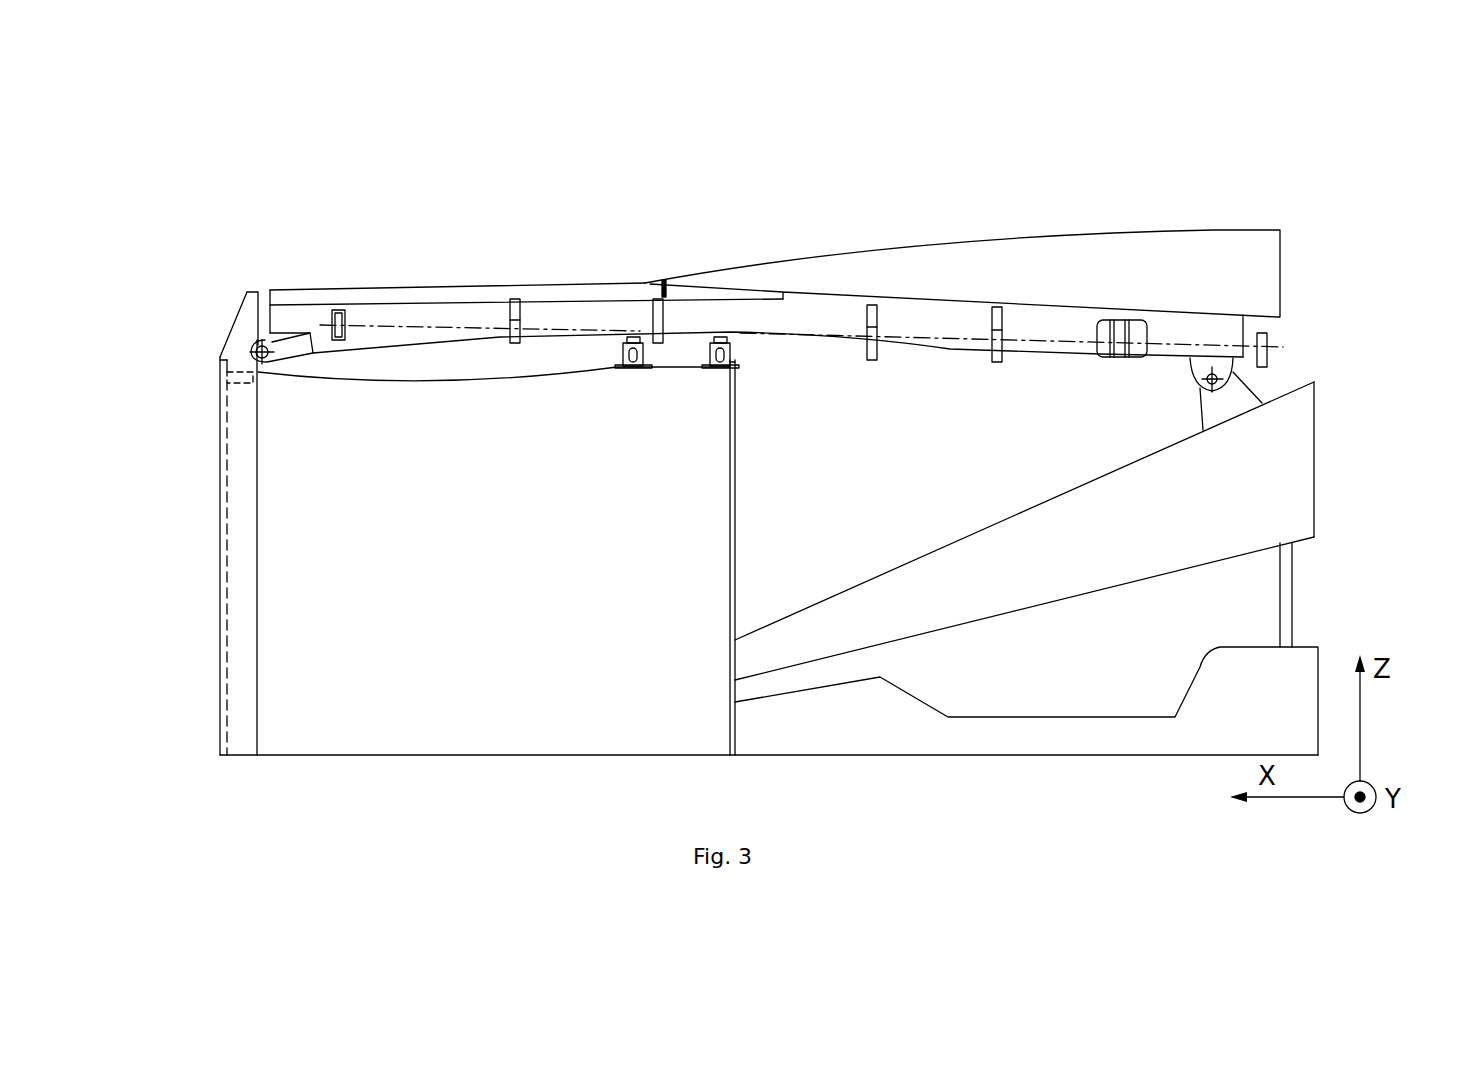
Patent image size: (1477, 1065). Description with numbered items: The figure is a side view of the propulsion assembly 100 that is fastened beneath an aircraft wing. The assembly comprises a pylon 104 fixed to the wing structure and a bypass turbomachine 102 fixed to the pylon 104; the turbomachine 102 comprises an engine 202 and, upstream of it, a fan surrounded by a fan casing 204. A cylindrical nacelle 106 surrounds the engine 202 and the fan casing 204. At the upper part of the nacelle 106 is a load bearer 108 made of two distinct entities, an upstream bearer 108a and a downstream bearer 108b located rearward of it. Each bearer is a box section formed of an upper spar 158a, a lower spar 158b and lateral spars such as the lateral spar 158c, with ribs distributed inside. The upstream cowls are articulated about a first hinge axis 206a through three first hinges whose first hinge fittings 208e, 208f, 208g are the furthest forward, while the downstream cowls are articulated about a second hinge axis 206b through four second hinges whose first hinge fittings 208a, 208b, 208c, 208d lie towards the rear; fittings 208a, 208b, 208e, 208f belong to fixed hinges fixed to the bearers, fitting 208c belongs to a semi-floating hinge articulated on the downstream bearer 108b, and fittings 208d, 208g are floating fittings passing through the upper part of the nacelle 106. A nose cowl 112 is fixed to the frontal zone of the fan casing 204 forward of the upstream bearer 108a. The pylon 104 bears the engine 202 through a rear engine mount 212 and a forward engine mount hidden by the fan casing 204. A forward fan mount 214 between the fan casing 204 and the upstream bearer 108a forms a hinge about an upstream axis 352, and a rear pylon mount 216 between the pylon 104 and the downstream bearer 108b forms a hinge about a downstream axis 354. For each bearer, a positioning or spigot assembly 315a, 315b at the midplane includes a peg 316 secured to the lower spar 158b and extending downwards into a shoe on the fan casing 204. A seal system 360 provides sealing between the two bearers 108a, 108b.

The propulsion assembly 100 is at (1352, 245).
The turbomachine 102 is at (1075, 813).
The pylon 104 is at (1235, 509).
The nacelle 106 is at (1252, 197).
The load bearer 108 is at (1240, 143).
The upstream bearer 108a is at (368, 297).
The downstream bearer 108b is at (1063, 255).
The nose cowl 112 is at (240, 332).
The upper spar 158a is at (817, 247).
The lower spar 158b is at (467, 337).
The lateral spar 158c is at (1182, 328).
The engine 202 is at (1280, 716).
The fan casing 204 is at (483, 599).
The first hinge axis 206a is at (410, 323).
The second hinge axis 206b is at (933, 337).
The first hinge fitting 208a is at (1265, 368).
The first hinge fitting 208b is at (1127, 352).
The first hinge fitting 208c is at (995, 352).
The first hinge fitting 208d is at (867, 345).
The first hinge fitting 208e is at (653, 323).
The first hinge fitting 208f is at (515, 335).
The first hinge fitting 208g is at (333, 320).
The rear engine mount 212 is at (1285, 600).
The forward fan mount 214 is at (290, 438).
The rear pylon mount 216 is at (1335, 342).
The positioning assembly 315a is at (600, 407).
The positioning assembly 315b is at (694, 402).
The peg 316 is at (722, 340).
The upstream axis 352 is at (255, 355).
The downstream axis 354 is at (1223, 381).
The seal system 360 is at (663, 297).